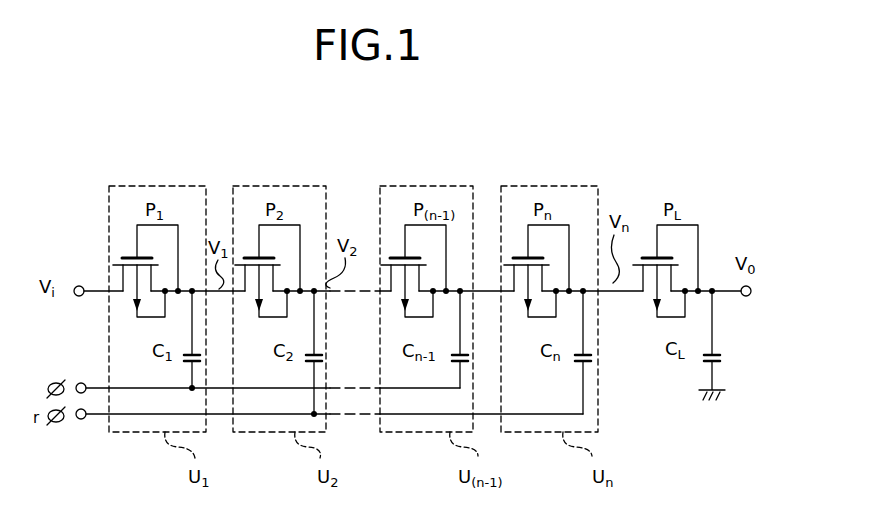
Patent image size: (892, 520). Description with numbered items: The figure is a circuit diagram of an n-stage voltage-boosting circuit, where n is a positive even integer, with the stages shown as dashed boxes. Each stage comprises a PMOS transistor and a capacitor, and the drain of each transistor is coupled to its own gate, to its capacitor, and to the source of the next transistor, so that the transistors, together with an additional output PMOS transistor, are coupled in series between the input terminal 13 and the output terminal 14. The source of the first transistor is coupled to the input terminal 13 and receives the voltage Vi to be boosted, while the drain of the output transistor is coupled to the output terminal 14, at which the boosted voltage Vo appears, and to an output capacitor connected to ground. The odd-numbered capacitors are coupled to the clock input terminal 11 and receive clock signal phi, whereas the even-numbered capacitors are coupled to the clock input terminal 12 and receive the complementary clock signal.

The clock input terminal 11 is at (81, 382).
The clock input terminal 12 is at (81, 420).
The input terminal 13 is at (79, 285).
The output terminal 14 is at (748, 297).